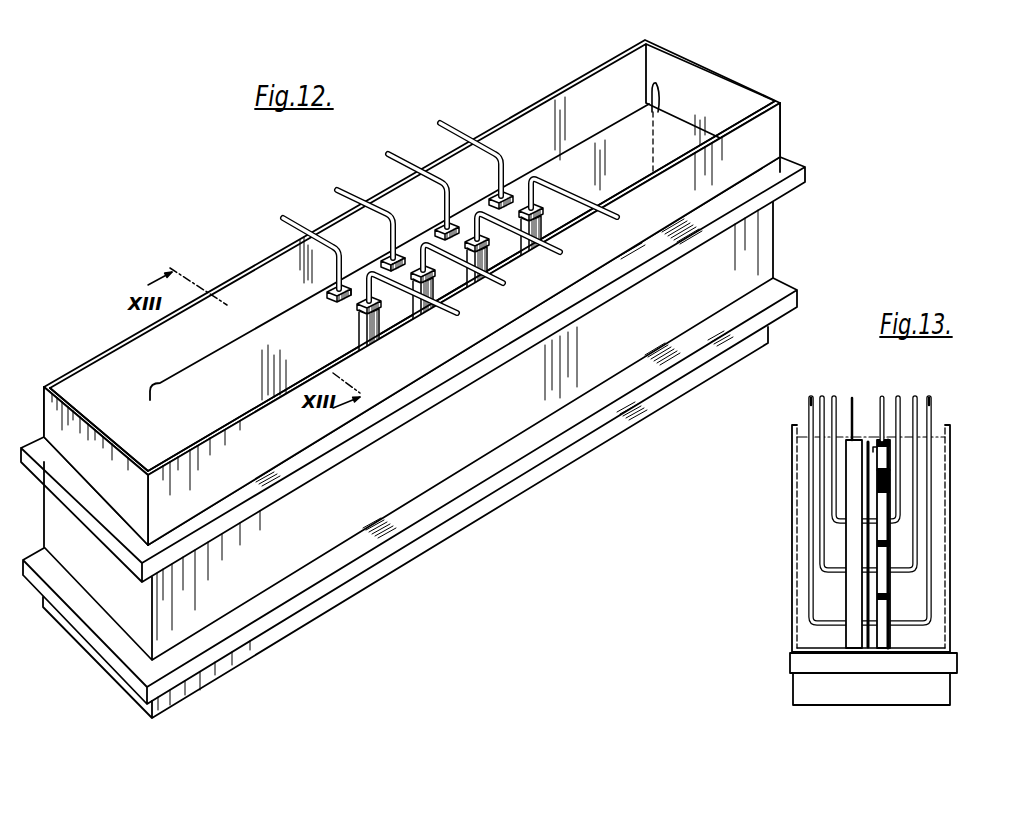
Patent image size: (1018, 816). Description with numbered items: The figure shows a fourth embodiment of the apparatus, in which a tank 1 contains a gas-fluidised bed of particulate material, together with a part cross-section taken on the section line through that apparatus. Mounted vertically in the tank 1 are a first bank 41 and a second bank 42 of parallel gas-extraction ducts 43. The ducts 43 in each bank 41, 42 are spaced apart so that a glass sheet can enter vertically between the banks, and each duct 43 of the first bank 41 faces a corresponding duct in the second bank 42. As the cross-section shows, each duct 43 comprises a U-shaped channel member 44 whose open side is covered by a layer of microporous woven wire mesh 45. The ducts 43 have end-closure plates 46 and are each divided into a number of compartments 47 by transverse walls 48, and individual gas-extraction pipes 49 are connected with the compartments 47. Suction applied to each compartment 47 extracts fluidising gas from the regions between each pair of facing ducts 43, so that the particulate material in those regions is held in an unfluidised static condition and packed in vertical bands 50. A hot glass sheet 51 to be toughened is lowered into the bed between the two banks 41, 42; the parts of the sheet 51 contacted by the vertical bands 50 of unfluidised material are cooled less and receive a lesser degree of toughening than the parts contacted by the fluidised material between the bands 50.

In FIG. 12, the tank 1 is at (708, 97).
In FIG. 13, the tank 1 is at (952, 521).
In FIG. 12, the first bank of gas-extraction ducts 41 is at (324, 294).
In FIG. 13, the first bank of gas-extraction ducts 41 is at (843, 460).
In FIG. 12, the second bank of gas-extraction ducts 42 is at (378, 338).
In FIG. 13, the second bank of gas-extraction ducts 42 is at (896, 458).
In FIG. 12, the gas-extraction duct 43 is at (382, 257).
In FIG. 13, the gas-extraction duct 43 is at (848, 598).
In FIG. 12, the U-shaped channel member 44 is at (400, 254).
In FIG. 13, the U-shaped channel member 44 is at (893, 587).
In FIG. 12, the microporous woven wire mesh 45 is at (404, 262).
In FIG. 13, the microporous woven wire mesh 45 is at (882, 557).
In FIG. 13, the end-closure plate 46 is at (882, 398).
In FIG. 13, the compartment 47 is at (882, 520).
In FIG. 13, the transverse wall 48 is at (883, 540).
In FIG. 12, the gas-extraction pipe 49 is at (402, 141).
In FIG. 13, the gas-extraction pipe 49 is at (852, 398).
In FIG. 12, the vertical band of unfluidised material 50 is at (352, 302).
In FIG. 13, the vertical band of unfluidised material 50 is at (873, 450).
In FIG. 12, the glass sheet 51 is at (617, 158).
In FIG. 13, the glass sheet 51 is at (877, 470).